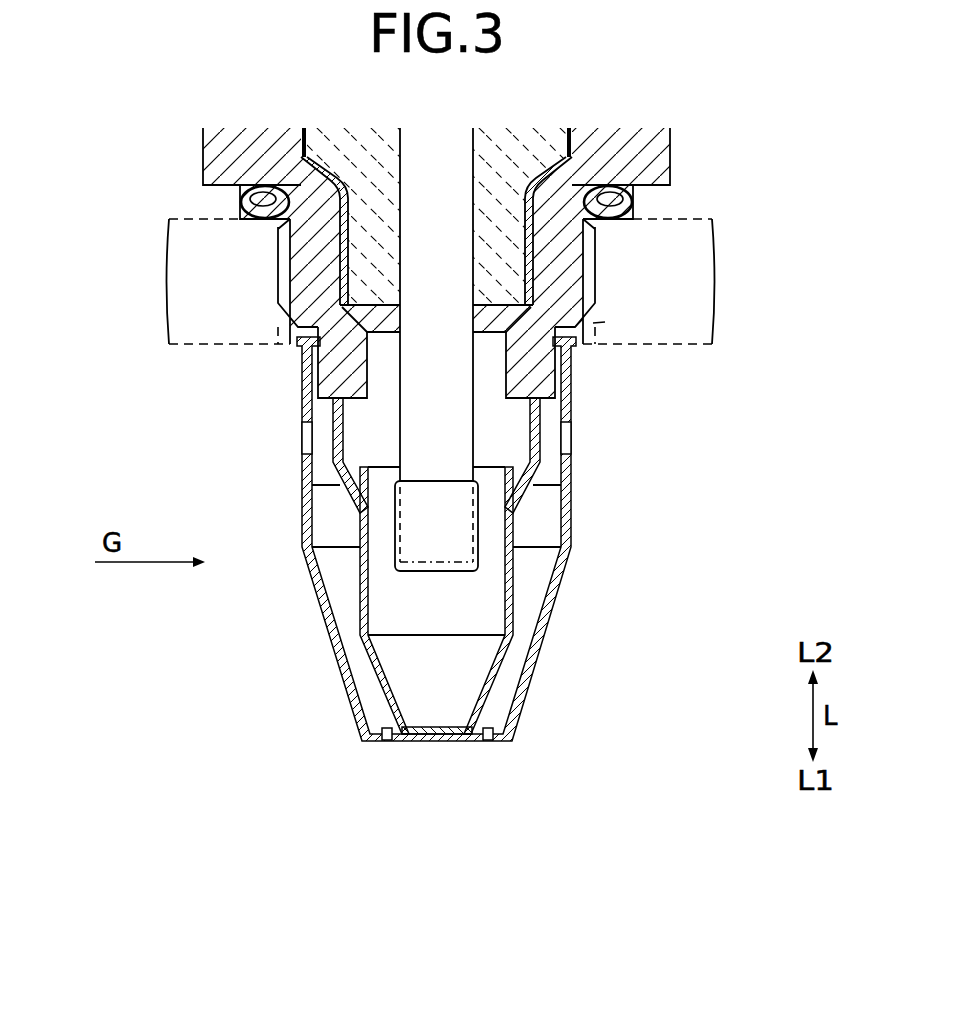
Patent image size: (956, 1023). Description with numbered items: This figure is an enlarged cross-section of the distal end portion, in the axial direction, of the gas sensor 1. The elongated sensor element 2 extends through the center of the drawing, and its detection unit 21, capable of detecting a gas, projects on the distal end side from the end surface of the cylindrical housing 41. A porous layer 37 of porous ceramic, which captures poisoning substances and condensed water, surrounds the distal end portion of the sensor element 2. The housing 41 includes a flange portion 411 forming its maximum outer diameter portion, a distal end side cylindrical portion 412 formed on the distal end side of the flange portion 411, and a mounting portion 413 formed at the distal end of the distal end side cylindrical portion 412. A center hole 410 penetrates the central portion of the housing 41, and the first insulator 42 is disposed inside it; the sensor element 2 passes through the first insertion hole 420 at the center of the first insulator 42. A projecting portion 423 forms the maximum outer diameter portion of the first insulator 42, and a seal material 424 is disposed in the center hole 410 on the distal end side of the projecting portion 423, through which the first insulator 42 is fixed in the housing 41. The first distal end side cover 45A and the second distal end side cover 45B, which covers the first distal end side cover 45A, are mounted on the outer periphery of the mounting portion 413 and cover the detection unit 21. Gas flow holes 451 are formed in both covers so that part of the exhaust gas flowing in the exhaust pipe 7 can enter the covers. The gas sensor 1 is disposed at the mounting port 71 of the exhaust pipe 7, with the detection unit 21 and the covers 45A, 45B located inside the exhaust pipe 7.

The gas sensor 1 is at (287, 700).
The sensor element 2 is at (432, 370).
The exhaust pipe 7 is at (716, 252).
The detection unit 21 is at (484, 557).
The porous layer 37 is at (440, 510).
The housing 41 is at (672, 152).
The first insulator 42 is at (288, 238).
The first distal end side cover 45A is at (505, 667).
The second distal end side cover 45B is at (328, 628).
The mounting port 71 is at (593, 323).
The center hole 410 is at (560, 303).
The flange portion 411 is at (240, 145).
The distal end side cylindrical portion 412 is at (305, 282).
The mounting portion 413 is at (325, 358).
The first insertion hole 420 is at (473, 167).
The projecting portion 423 is at (240, 192).
The seal material 424 is at (580, 163).
The gas flow holes 451 is at (322, 440).